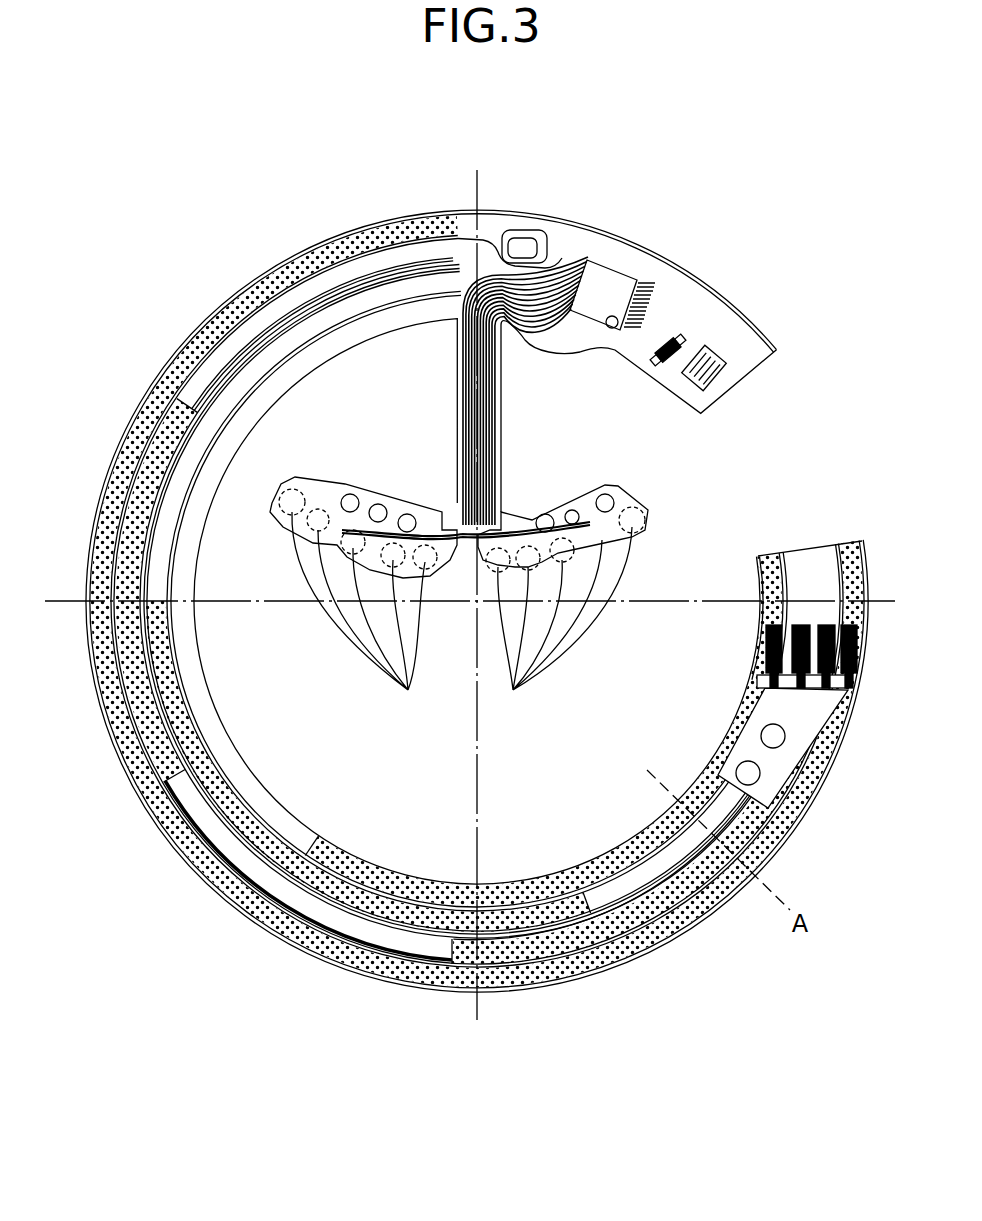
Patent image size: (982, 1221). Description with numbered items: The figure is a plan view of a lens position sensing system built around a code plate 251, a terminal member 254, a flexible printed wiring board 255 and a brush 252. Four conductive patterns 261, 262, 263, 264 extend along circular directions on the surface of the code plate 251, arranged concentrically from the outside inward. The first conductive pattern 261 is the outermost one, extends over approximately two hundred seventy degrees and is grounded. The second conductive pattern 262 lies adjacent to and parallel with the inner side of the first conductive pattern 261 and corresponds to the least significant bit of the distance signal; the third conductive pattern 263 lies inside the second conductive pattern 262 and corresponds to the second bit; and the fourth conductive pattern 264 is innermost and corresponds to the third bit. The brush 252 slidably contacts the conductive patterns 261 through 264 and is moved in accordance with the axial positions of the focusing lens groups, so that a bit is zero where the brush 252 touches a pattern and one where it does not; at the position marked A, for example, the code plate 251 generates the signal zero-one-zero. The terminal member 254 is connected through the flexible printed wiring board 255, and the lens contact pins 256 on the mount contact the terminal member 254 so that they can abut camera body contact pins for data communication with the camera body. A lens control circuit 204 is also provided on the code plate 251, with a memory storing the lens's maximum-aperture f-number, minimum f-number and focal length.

The lens control circuit 204 is at (612, 280).
The code plate 251 is at (320, 240).
The brush 252 is at (768, 712).
The terminal member 254 is at (450, 568).
The flexible printed wiring board 255 is at (457, 412).
The lens contact pins 256 is at (462, 620).
The first conductive pattern 261 is at (280, 925).
The second conductive pattern 262 is at (576, 945).
The third conductive pattern 263 is at (243, 823).
The fourth conductive pattern 264 is at (527, 897).